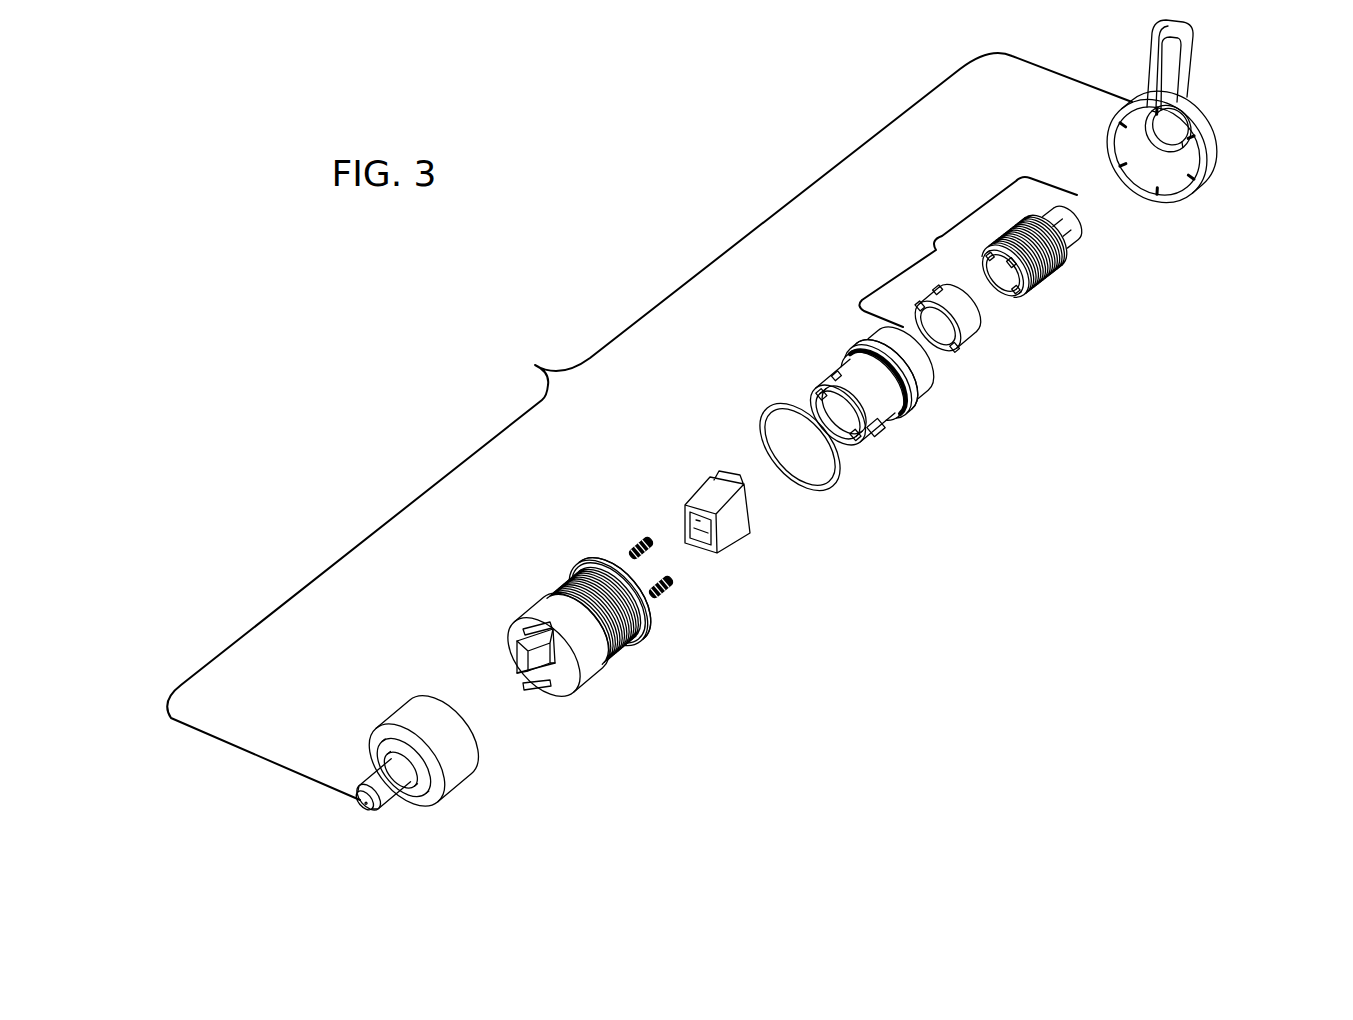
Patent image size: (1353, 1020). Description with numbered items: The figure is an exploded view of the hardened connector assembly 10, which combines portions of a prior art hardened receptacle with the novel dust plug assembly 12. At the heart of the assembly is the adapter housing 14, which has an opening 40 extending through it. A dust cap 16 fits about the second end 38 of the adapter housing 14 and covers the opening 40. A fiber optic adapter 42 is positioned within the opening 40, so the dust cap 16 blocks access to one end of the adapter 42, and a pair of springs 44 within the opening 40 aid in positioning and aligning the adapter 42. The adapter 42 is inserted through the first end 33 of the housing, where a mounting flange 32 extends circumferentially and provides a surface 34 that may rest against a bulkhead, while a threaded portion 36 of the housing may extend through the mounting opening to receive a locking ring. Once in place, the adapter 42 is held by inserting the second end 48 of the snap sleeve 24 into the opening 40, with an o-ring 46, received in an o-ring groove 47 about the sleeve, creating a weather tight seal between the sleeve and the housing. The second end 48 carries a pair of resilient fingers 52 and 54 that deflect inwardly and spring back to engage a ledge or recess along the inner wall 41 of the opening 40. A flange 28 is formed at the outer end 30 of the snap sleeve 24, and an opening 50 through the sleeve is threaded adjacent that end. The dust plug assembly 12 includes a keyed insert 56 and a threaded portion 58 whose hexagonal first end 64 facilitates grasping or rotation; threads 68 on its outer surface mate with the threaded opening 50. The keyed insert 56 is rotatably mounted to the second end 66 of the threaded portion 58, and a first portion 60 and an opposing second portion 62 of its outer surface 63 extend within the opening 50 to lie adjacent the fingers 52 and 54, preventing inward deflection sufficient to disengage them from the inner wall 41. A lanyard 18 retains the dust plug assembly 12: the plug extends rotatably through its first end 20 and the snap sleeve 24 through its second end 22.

The hardened connector assembly 10 is at (649, 426).
The dust plug assembly 12 is at (968, 252).
The adapter housing 14 is at (592, 617).
The dust cap 16 is at (467, 775).
The lanyard 18 is at (1188, 60).
The first end 20 is at (1185, 172).
The second end 22 is at (1190, 185).
The snap sleeve 24 is at (848, 387).
The flange 28 is at (916, 401).
The outer end 30 is at (858, 341).
The mounting flange 32 is at (645, 635).
The first end 33 is at (622, 591).
The surface 34 is at (633, 650).
The threaded portion 36 is at (557, 593).
The second end 38 is at (510, 679).
The opening 40 is at (530, 667).
The inner wall 41 is at (540, 658).
The fiber optic adapter 42 is at (708, 500).
The springs 44 is at (635, 541).
The o-ring 46 is at (770, 438).
The o-ring groove 47 is at (847, 357).
The second end 48 is at (850, 447).
The opening 50 is at (840, 408).
The finger 52 is at (822, 396).
The finger 54 is at (875, 423).
The keyed insert 56 is at (972, 322).
The threaded portion 58 is at (1083, 274).
The first portion 60 is at (915, 327).
The second portion 62 is at (979, 330).
The outer surface 63 is at (976, 311).
The first end 64 is at (1080, 230).
The second end 66 is at (1013, 290).
The threaded portion 68 is at (1072, 255).